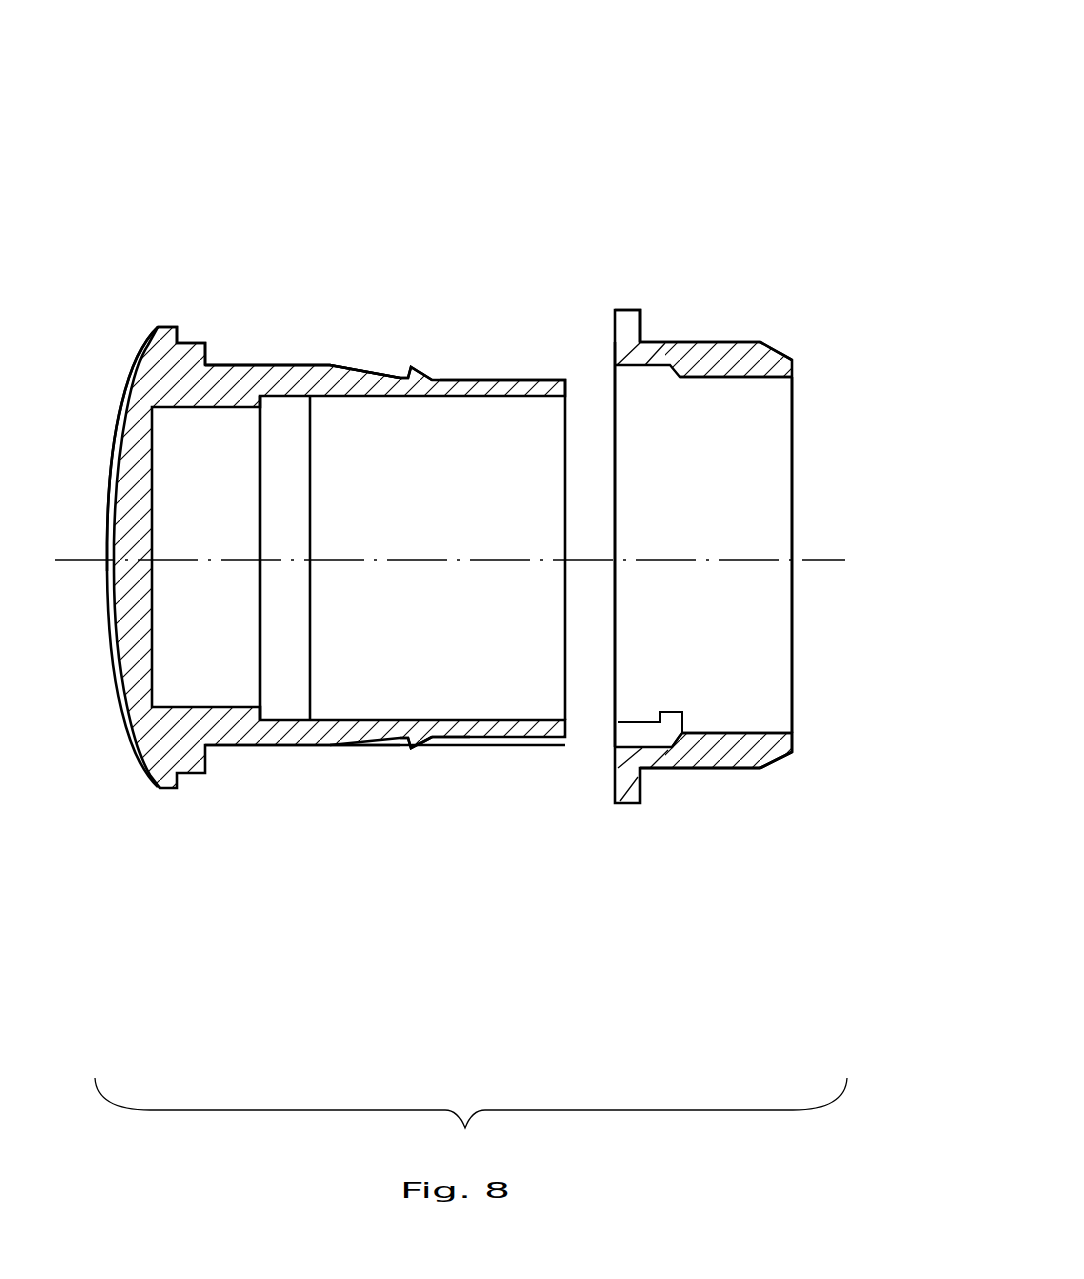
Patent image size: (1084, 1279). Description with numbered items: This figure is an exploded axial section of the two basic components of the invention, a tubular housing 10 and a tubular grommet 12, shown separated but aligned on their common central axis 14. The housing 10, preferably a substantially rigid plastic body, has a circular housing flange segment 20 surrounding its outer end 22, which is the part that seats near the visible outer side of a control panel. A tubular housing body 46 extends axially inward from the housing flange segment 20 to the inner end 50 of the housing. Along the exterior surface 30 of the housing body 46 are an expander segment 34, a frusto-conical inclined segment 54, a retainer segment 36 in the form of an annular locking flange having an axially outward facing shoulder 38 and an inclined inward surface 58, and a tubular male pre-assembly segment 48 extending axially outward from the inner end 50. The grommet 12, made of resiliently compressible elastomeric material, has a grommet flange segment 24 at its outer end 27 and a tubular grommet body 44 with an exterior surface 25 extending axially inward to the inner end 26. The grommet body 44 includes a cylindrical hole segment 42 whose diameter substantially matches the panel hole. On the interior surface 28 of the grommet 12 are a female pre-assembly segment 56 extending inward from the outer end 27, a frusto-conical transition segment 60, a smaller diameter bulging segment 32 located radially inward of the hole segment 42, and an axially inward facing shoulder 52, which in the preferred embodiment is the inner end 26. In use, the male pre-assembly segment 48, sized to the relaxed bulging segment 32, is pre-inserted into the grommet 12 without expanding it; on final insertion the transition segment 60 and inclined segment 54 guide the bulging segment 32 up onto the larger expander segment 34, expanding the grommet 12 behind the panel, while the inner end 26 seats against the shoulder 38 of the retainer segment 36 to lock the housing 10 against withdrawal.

The tubular housing 10 is at (515, 493).
The tubular grommet 12 is at (787, 533).
The central axis 14 is at (80, 559).
The housing flange segment 20 is at (203, 300).
The outer end of housing 22 is at (110, 645).
The grommet flange segment 24 is at (612, 300).
The exterior surface of grommet body 25 is at (720, 770).
The inner end of grommet 26 is at (795, 548).
The outer end of grommet 27 is at (600, 535).
The interior surface of grommet 28 is at (725, 378).
The exterior surface of housing 30 is at (243, 362).
The bulging segment 32 is at (683, 704).
The expander segment 34 is at (338, 327).
The retainer segment 36 is at (457, 772).
The shoulder of retainer segment 38 is at (412, 743).
The hole segment 42 is at (645, 334).
The tubular grommet body 44 is at (643, 818).
The tubular housing body 46 is at (570, 795).
The male pre-assembly segment 48 is at (563, 372).
The inner end of housing 50 is at (565, 590).
The inward facing shoulder 52 is at (792, 752).
The inclined segment 54 is at (410, 347).
The female pre-assembly segment 56 is at (640, 722).
The inclined surface of retainer segment 58 is at (432, 740).
The transition segment 60 is at (668, 712).